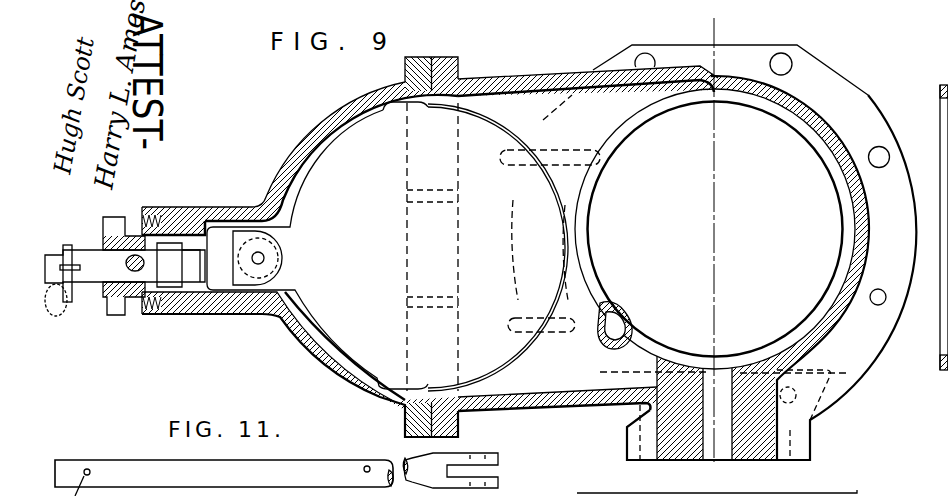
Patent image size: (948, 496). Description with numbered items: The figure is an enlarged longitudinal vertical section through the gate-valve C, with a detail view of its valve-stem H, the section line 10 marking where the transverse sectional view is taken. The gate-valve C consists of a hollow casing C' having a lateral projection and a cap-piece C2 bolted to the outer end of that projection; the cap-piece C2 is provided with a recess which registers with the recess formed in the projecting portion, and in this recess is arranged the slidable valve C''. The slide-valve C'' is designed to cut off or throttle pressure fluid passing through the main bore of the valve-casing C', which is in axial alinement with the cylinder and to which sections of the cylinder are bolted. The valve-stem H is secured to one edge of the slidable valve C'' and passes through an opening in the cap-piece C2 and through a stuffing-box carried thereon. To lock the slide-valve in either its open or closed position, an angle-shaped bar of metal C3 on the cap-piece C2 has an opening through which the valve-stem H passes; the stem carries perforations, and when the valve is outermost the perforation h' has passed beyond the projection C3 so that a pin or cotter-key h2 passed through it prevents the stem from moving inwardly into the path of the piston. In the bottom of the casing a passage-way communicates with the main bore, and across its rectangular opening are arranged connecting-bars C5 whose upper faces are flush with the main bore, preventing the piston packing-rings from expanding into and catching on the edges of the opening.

In FIG. 9, the gate-valve C is at (703, 236).
In FIG. 9, the hollow casing C' is at (741, 213).
In FIG. 9, the slidable valve C'' is at (387, 246).
In FIG. 9, the cap-piece C2 is at (337, 405).
In FIG. 9, the projection or angle-shaped bar of metal C3 is at (127, 261).
In FIG. 9, the connecting-bars C5 is at (617, 324).
In FIG. 9, the valve-stem H is at (97, 266).
In FIG. 11, the valve-stem H is at (108, 470).
In FIG. 11, the perforation h' is at (426, 461).
In FIG. 9, the pin or cotter-key h2 is at (60, 306).
In FIG. 9, the section line 10 is at (715, 246).